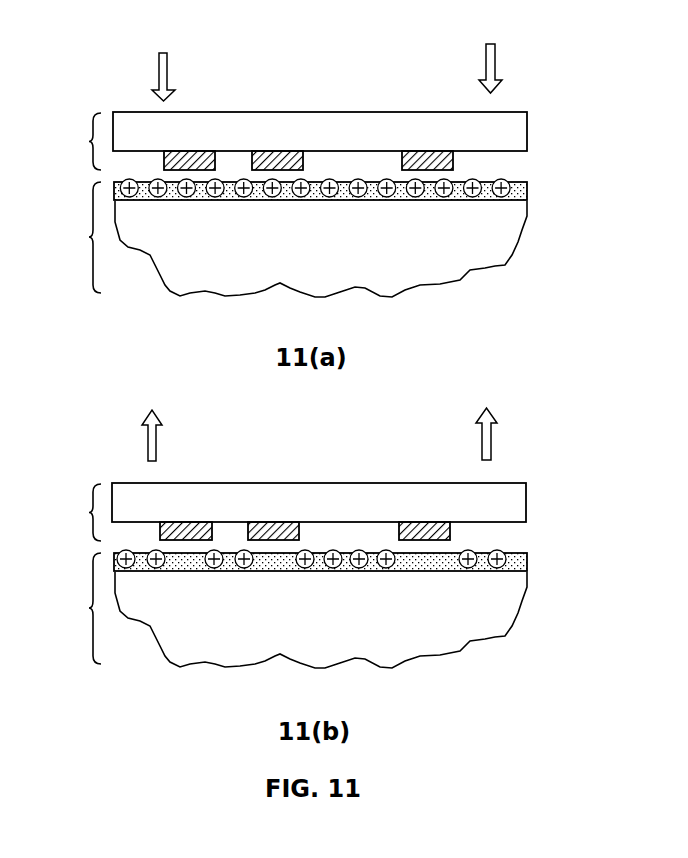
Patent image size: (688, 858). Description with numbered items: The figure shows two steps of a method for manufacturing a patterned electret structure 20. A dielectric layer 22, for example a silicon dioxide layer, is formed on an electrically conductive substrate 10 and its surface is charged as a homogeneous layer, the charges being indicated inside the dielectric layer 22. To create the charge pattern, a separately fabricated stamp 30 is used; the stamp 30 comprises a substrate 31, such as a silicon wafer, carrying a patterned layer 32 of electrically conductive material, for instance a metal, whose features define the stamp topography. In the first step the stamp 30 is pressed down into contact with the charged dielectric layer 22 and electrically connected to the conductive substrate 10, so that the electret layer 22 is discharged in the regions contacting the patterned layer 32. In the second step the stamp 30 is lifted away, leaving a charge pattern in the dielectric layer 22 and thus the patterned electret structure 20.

The substrate 10 is at (478, 237).
The electret structure 20 is at (75, 423).
The dielectric layer 22 is at (513, 190).
The stamp 30 is at (75, 327).
The substrate of the stamp 31 is at (513, 123).
The patterned layer 32 is at (192, 152).